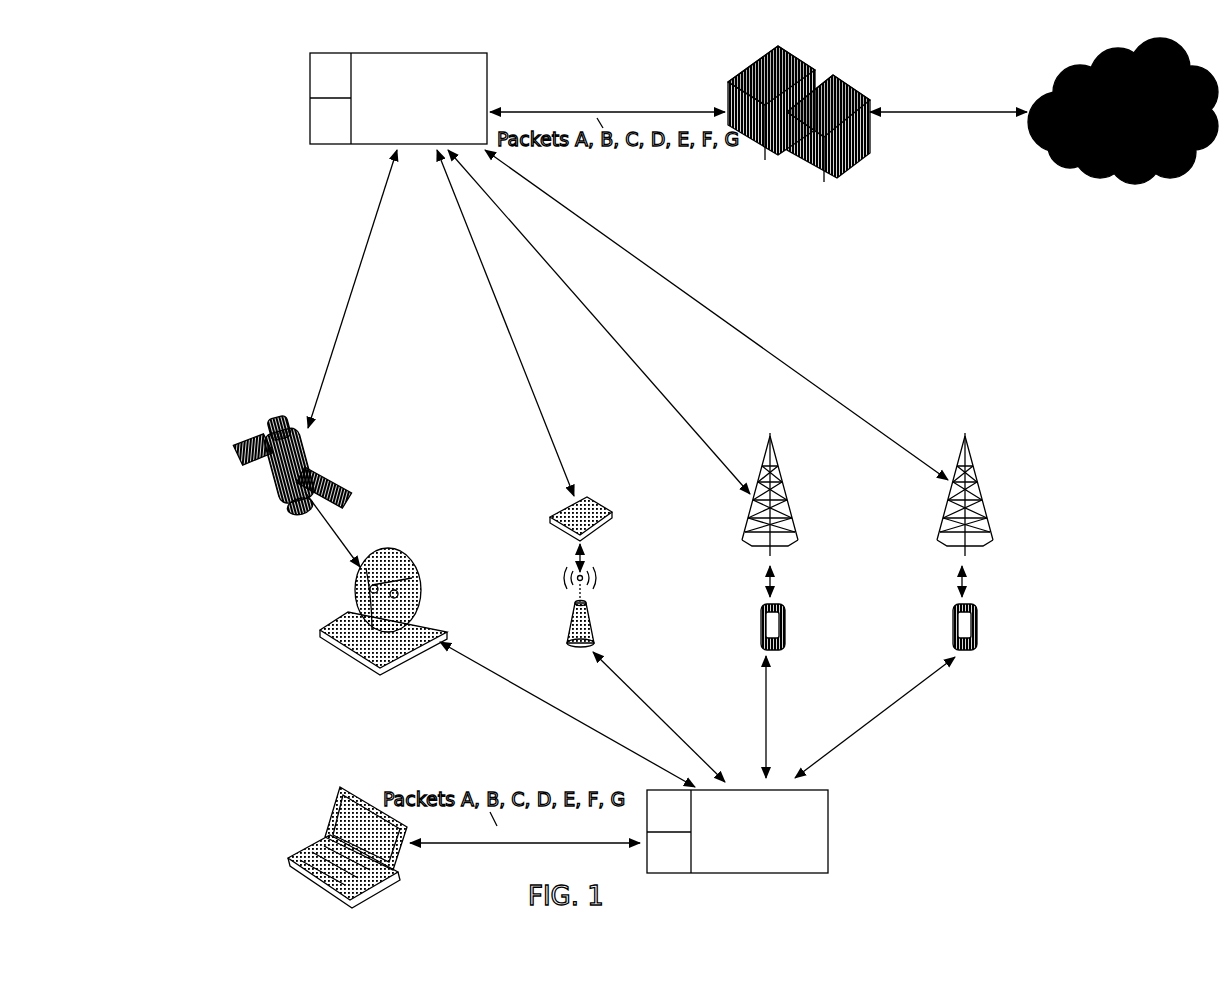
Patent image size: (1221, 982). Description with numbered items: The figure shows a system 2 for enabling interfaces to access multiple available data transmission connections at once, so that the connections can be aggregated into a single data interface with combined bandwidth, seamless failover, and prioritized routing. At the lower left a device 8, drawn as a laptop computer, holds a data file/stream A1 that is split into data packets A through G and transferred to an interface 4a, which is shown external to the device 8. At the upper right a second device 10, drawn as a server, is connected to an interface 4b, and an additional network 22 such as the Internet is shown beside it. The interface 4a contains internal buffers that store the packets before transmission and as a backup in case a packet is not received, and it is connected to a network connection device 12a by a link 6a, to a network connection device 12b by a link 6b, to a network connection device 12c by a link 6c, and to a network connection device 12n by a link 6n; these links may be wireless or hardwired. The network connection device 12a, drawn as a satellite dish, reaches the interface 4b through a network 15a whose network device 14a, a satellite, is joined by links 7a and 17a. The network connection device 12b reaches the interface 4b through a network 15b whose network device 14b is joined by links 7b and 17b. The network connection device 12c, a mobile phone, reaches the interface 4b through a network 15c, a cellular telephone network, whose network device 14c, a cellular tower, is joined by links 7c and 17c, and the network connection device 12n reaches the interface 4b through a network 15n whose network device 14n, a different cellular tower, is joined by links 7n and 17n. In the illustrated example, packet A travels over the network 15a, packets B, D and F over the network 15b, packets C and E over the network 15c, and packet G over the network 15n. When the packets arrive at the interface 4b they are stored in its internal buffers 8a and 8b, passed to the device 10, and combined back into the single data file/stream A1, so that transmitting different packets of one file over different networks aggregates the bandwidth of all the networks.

The system 2 is at (245, 115).
The interface 4b is at (398, 98).
The internal buffer 8a is at (328, 79).
The internal buffer 8b is at (328, 124).
The data file/stream A1 is at (791, 96).
The device 10 is at (863, 88).
The additional network 22 is at (1188, 170).
The link 17a is at (394, 204).
The link 17b is at (500, 328).
The link 17c is at (620, 352).
The link 17n is at (738, 298).
The network 15a is at (338, 310).
The network 15b is at (482, 306).
The network 15c is at (580, 321).
The network 15n is at (850, 380).
The network device 14a is at (240, 436).
The network device 14b is at (552, 515).
The network device 14c is at (746, 512).
The network device 14n is at (978, 458).
The link 7a is at (320, 534).
The link 7b is at (572, 553).
The link 7c is at (782, 582).
The link 7n is at (974, 585).
The network connection device 12a is at (316, 624).
The network connection device 12b is at (568, 616).
The network connection device 12c is at (790, 630).
The network connection device 12n is at (984, 640).
The link 6a is at (506, 688).
The link 6b is at (636, 664).
The link 6c is at (812, 700).
The link 6n is at (928, 690).
The interface 4a is at (737, 831).
The device 8 is at (340, 786).